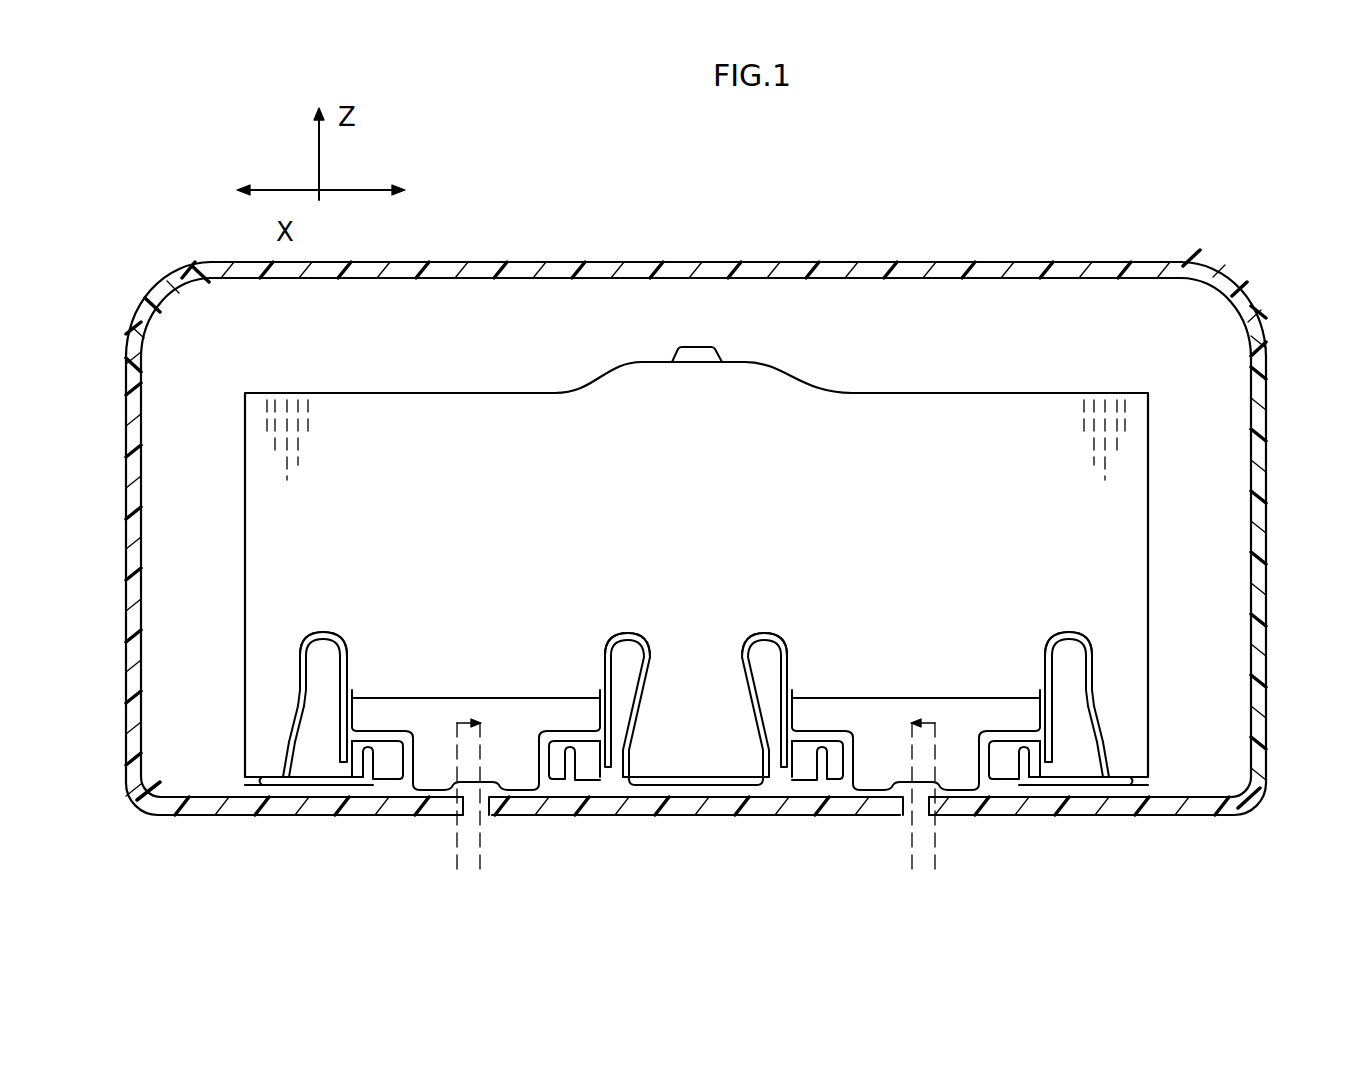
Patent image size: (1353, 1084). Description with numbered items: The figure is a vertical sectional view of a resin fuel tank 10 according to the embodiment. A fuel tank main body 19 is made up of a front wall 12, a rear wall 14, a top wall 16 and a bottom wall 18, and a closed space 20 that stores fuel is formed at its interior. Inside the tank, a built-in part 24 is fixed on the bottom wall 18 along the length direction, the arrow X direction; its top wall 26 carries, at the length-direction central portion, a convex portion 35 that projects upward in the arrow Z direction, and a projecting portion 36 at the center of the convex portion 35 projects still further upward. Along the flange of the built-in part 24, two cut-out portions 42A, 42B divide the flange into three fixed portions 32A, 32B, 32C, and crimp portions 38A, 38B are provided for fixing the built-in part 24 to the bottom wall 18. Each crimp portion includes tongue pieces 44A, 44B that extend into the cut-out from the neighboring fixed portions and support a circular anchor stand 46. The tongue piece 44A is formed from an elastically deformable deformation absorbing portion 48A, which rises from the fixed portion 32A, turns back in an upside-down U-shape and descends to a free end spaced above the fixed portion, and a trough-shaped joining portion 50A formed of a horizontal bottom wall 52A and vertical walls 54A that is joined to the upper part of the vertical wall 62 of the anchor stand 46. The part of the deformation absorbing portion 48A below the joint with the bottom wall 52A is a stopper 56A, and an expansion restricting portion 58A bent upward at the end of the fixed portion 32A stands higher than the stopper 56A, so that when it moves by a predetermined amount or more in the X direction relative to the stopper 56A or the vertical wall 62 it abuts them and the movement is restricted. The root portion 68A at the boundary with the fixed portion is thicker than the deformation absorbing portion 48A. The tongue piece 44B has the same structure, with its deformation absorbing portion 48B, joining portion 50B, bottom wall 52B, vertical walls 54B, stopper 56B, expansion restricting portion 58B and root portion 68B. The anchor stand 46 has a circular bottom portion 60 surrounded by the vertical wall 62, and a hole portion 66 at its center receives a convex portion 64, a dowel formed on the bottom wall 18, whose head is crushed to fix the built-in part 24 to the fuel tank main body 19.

The resin fuel tank 10 is at (700, 200).
The front wall 12 is at (126, 522).
The rear wall 14 is at (1266, 527).
The top wall 16 is at (517, 262).
The bottom wall 18 is at (722, 815).
The fuel tank main body 19 is at (1093, 262).
The closed space 20 is at (356, 326).
The built-in part 24 is at (487, 393).
The top wall 26 is at (950, 393).
The fixed portion 32A is at (318, 800).
The fixed portion 32B is at (665, 800).
The fixed portion 32C is at (1072, 800).
The convex portion 35 is at (795, 372).
The projecting portion 36 is at (708, 347).
The crimp portion 38A is at (460, 552).
The crimp portion 38B is at (935, 552).
The cut-out portion 42A is at (490, 800).
The cut-out portion 42B is at (900, 800).
The tongue piece 44A is at (320, 632).
The tongue piece 44B is at (628, 632).
The anchor stand 46 is at (468, 697).
The deformation absorbing portion 48A is at (297, 685).
The deformation absorbing portion 48B is at (651, 688).
The joining portion 50A is at (385, 697).
The joining portion 50B is at (570, 697).
The bottom wall 52A is at (413, 725).
The bottom wall 52B is at (578, 725).
The vertical walls 54A is at (388, 695).
The vertical walls 54B is at (565, 695).
The stopper 56A is at (368, 778).
The stopper 56B is at (572, 780).
The expansion restricting portion 58A is at (380, 770).
The expansion restricting portion 58B is at (590, 770).
The bottom portion 60 is at (435, 797).
The vertical wall 62 is at (490, 697).
The convex portion (dowel) 64 is at (497, 785).
The hole portion 66 is at (452, 785).
The root portion 68A is at (273, 772).
The root portion 68B is at (640, 775).